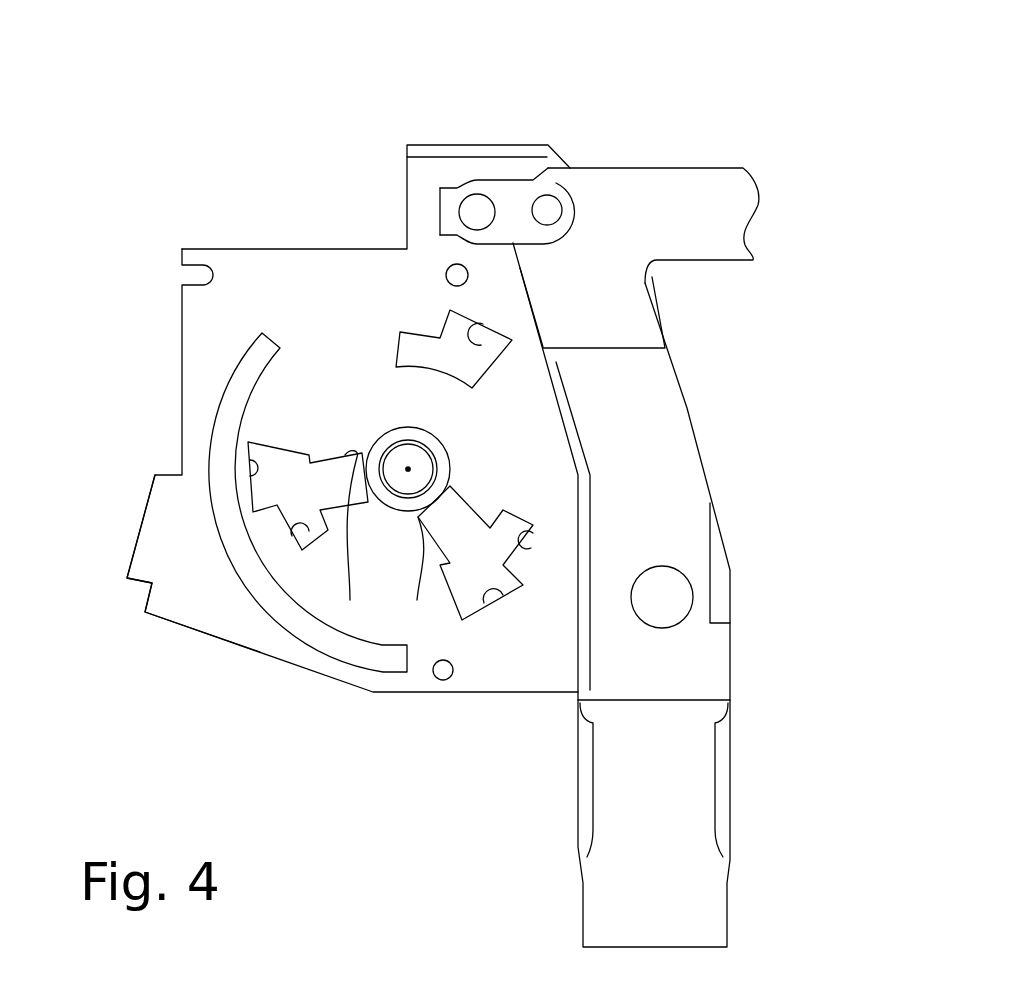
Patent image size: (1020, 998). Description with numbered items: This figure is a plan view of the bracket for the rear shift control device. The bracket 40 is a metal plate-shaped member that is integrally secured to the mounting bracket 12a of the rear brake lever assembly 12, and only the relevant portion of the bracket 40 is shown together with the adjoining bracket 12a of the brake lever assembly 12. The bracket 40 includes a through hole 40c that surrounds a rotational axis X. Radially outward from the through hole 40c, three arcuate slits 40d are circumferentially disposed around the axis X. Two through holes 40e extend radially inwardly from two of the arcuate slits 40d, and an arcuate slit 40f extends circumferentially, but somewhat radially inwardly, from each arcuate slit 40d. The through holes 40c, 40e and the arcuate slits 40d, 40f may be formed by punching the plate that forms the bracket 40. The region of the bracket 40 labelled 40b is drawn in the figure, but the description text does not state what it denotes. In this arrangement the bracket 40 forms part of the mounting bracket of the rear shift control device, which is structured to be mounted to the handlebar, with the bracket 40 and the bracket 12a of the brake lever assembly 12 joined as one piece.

The rear brake lever assembly 12 is at (677, 162).
The mounting bracket 12a is at (678, 458).
The mounting bracket 40 is at (318, 214).
The stepped edge portion 40b is at (203, 600).
The through hole 40c is at (420, 458).
The arcuate slits 40d is at (478, 337).
The through holes 40e is at (417, 600).
The arcuate slit 40f is at (403, 340).
The rotational axis X is at (408, 469).